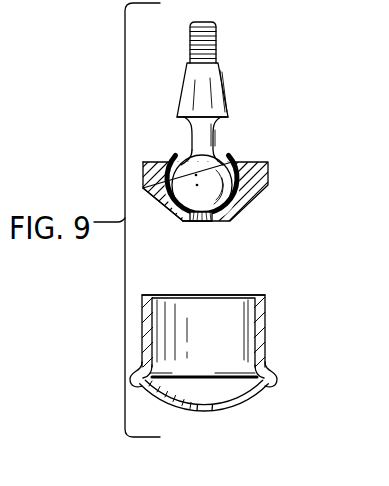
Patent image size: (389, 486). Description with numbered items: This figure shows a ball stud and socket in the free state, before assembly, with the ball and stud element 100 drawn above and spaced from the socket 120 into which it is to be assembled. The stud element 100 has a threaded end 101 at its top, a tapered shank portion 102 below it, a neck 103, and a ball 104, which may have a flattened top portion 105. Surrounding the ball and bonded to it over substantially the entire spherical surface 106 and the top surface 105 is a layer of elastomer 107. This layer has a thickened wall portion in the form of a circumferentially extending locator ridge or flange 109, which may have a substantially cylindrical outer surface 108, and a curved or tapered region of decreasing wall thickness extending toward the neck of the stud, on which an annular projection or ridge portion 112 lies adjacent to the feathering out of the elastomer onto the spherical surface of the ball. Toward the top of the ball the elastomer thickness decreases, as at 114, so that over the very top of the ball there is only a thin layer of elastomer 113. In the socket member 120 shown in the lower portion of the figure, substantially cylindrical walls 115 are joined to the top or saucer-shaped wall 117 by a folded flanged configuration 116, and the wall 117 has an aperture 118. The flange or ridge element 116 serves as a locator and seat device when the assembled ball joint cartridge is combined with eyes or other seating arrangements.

The ball and stud element 100 is at (231, 119).
The threaded end 101 is at (214, 45).
The tapered shank portion 102 is at (226, 94).
The neck 103 is at (219, 141).
The ball 104 is at (236, 196).
The flattened top portion 105 is at (213, 222).
The spherical surface 106 is at (231, 165).
The layer of elastomer 107 is at (268, 178).
The cylindrical outer surface 108 is at (143, 173).
The locator ridge or flange 109 is at (146, 192).
The annular projection or ridge portion 112 is at (172, 128).
The thin layer of elastomer 113 is at (202, 222).
The decreasing thickness portion 114 is at (192, 222).
The cylindrical walls 115 is at (264, 329).
The folded flanged configuration 116 is at (272, 380).
The saucer-shaped wall 117 is at (236, 403).
The aperture 118 is at (203, 412).
The socket 120 is at (269, 313).